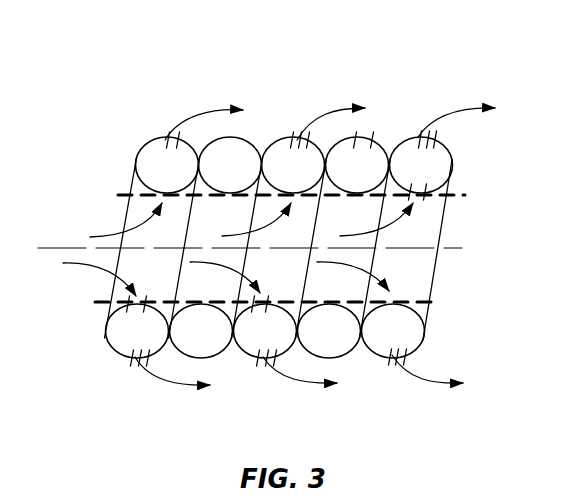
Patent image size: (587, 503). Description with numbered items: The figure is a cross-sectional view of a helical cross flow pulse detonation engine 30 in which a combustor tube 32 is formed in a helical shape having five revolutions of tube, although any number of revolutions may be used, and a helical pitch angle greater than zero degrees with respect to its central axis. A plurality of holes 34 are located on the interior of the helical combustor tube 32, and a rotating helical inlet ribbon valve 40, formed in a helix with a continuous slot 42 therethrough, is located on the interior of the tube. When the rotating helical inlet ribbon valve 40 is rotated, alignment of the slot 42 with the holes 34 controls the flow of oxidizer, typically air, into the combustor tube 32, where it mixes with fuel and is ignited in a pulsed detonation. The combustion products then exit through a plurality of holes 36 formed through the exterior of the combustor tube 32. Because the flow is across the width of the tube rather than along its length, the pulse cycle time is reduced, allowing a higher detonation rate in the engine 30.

The helical cross flow pulse detonation engine 30 is at (382, 68).
The combustor tube 32 is at (245, 138).
The holes 34 is at (417, 185).
The holes 36 is at (168, 139).
The rotating helical inlet ribbon valve 40 is at (455, 193).
The slot 42 is at (373, 197).